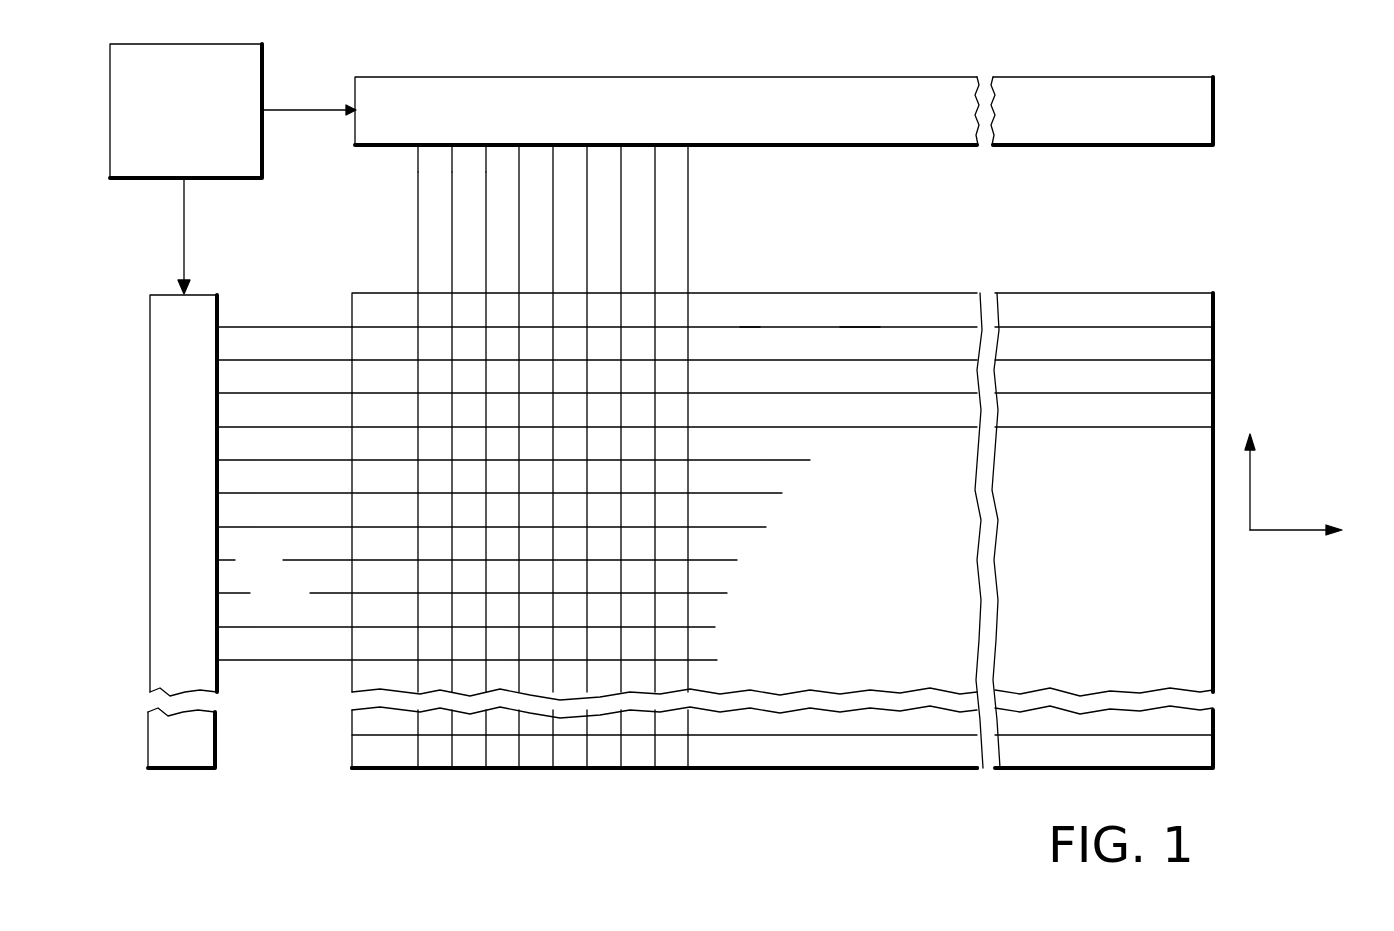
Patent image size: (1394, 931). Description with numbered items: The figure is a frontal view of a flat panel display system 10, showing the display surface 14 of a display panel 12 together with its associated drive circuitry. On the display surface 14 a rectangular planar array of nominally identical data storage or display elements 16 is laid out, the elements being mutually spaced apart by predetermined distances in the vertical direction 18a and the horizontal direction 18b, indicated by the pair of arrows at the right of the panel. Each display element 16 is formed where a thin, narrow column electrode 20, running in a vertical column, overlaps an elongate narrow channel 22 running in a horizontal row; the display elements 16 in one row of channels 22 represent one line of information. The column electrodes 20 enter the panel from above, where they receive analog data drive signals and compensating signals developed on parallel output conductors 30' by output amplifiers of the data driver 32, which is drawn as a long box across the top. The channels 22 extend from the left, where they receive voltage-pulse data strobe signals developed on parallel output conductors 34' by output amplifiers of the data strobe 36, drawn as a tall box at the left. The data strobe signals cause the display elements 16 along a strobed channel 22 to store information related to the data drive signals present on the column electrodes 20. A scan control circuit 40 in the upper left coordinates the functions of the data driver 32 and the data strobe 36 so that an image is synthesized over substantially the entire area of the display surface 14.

The flat panel display system 10 is at (752, 790).
The display panel 12 is at (505, 782).
The display surface 14 is at (918, 762).
The display elements 16 is at (383, 793).
The vertical direction 18a is at (1256, 468).
The horizontal direction 18b is at (1303, 534).
The column electrodes 20 is at (797, 550).
The channels 22 is at (786, 360).
The parallel output conductors 30' is at (441, 131).
The data driver 32 is at (1037, 77).
The parallel output conductors 34' is at (255, 310).
The data strobe 36 is at (150, 378).
The scan control circuit 40 is at (110, 112).